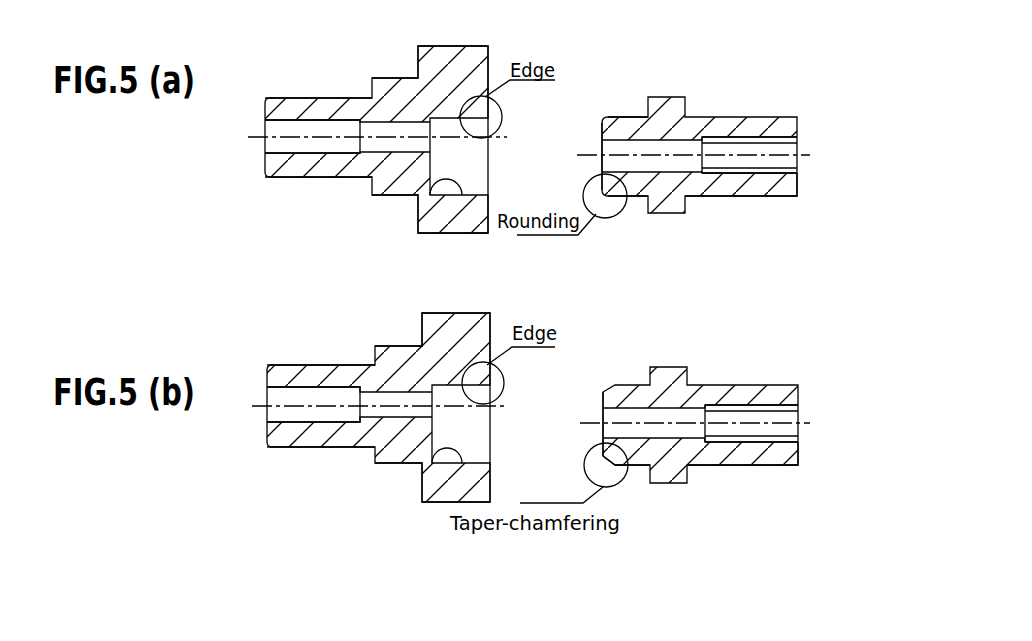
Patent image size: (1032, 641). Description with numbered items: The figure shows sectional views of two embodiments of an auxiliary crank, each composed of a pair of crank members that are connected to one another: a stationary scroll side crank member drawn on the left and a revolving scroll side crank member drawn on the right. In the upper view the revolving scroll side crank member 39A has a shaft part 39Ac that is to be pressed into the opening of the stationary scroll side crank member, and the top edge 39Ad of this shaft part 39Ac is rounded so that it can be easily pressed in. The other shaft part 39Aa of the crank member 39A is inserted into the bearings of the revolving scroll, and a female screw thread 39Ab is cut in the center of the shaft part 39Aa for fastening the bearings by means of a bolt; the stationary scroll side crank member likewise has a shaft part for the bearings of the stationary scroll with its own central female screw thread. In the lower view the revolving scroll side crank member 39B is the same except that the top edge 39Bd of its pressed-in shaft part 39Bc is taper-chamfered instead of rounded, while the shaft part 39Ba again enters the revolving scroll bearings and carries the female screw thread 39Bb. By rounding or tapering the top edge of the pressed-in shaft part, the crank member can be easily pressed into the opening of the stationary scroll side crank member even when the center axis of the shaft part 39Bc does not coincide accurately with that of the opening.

The revolving scroll side crank member 39A is at (752, 118).
The shaft part 39Aa is at (767, 198).
The female screw thread 39Ab is at (770, 165).
The shaft part 39Ac is at (620, 128).
The top edge 39Ad is at (602, 117).
The revolving scroll side crank member 39B is at (753, 390).
The shaft part 39Ba is at (770, 467).
The female screw thread 39Bb is at (770, 435).
The shaft part 39Bc is at (643, 457).
The top edge 39Bd is at (603, 388).